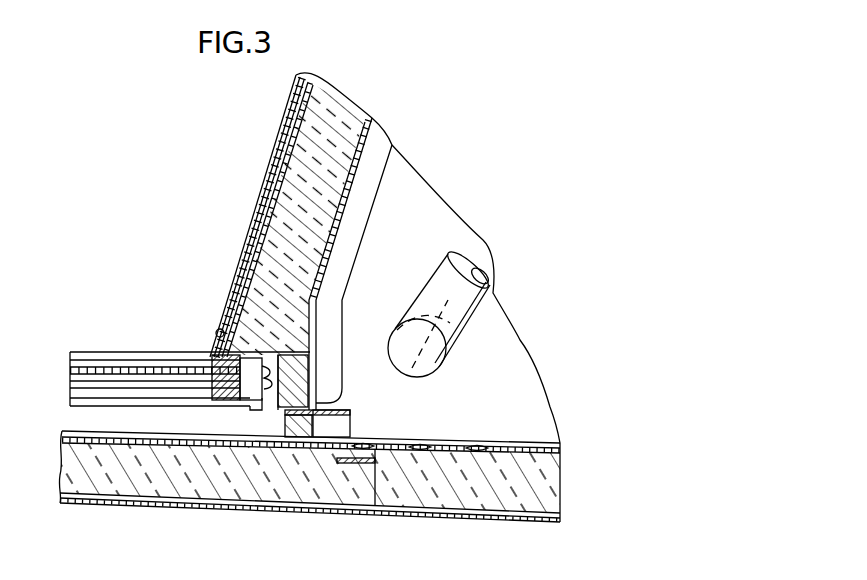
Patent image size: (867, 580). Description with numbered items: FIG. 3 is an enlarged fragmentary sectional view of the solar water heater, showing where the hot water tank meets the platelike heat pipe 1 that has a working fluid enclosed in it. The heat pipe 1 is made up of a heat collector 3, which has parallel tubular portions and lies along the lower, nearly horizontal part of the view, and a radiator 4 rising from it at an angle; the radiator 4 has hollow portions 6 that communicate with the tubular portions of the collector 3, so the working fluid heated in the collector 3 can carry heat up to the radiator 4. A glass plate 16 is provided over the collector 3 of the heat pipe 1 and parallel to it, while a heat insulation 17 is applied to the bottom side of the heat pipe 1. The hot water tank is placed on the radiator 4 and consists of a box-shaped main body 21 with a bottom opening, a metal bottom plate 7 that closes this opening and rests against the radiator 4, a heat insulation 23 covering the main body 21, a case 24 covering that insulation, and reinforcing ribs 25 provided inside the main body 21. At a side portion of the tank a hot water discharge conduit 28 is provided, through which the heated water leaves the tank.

The heat pipe 1 is at (292, 469).
The heat collector 3 is at (105, 435).
The radiator 4 is at (392, 440).
The hollow portions 6 is at (424, 440).
The metal bottom plate 7 is at (487, 441).
The glass plate 16 is at (160, 370).
The heat insulation 17 is at (102, 487).
The main body 21 is at (347, 205).
The heat insulation 23 is at (270, 235).
The case 24 is at (276, 181).
The reinforcing ribs 25 is at (348, 241).
The hot water discharge conduit 28 is at (433, 365).